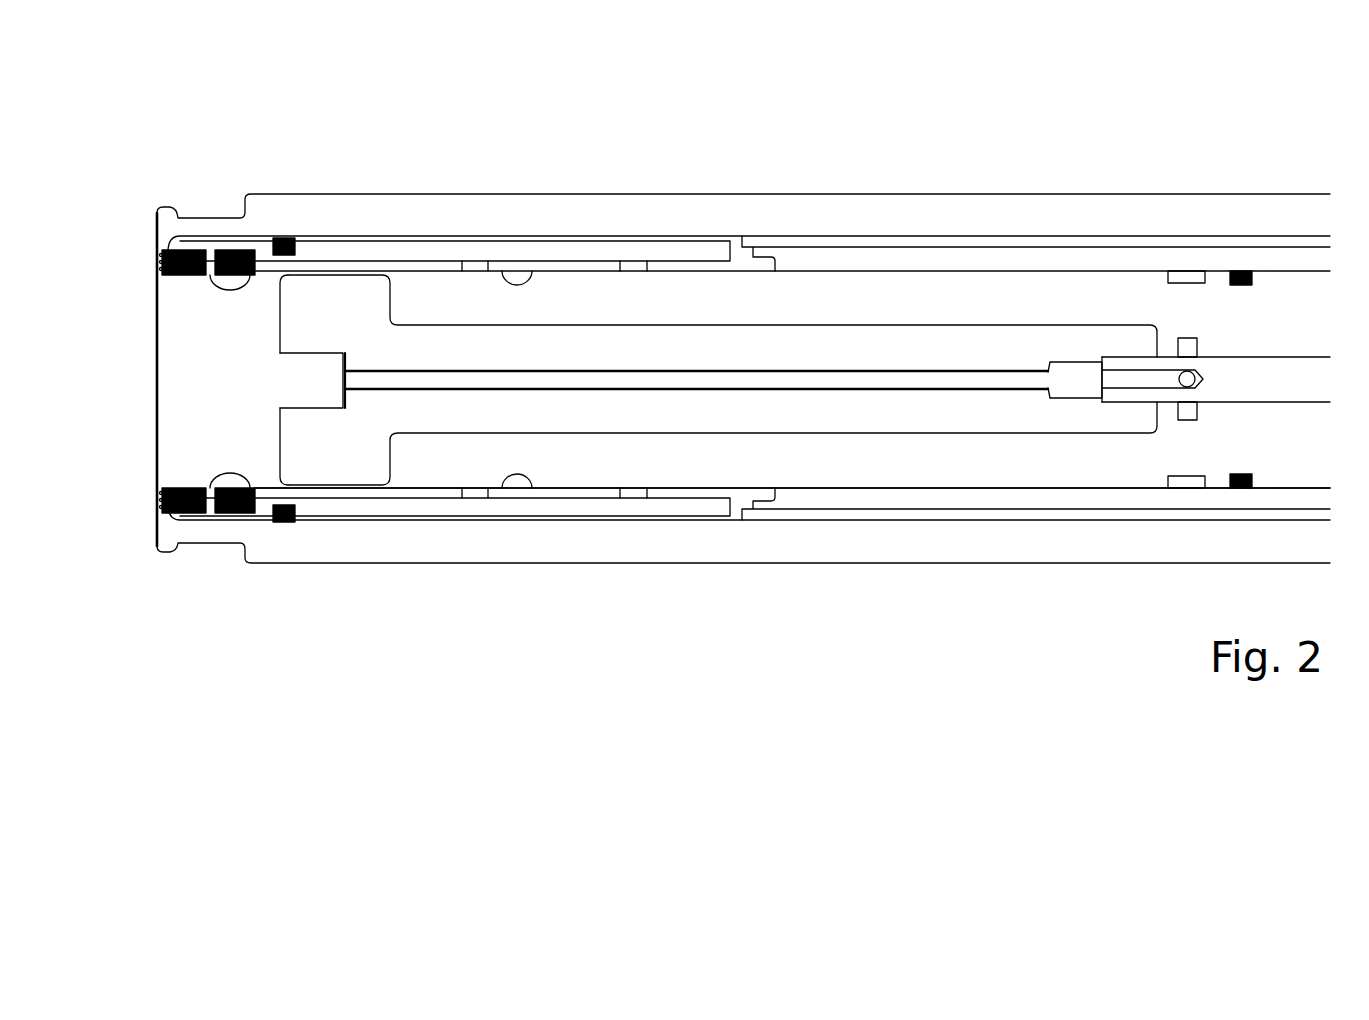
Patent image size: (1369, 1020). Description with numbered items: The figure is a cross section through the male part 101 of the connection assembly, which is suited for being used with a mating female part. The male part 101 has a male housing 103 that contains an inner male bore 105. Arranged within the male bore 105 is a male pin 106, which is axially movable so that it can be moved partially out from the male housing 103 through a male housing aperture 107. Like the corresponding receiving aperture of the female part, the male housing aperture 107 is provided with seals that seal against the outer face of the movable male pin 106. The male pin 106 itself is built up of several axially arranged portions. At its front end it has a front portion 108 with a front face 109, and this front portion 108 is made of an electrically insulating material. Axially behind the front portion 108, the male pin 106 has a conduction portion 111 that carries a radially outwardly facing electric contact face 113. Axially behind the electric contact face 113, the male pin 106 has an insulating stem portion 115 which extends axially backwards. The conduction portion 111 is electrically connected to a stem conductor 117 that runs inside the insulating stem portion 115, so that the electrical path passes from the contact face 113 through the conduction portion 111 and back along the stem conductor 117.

The male part 101 is at (530, 98).
The male housing 103 is at (705, 213).
The male bore 105 is at (528, 276).
The male pin 106 is at (893, 266).
The male housing aperture 107 is at (266, 290).
The front portion 108 is at (230, 382).
The front face 109 is at (137, 284).
The conduction portion 111 is at (352, 457).
The electric contact face 113 is at (349, 272).
The insulating stem portion 115 is at (772, 473).
The stem conductor 117 is at (665, 425).